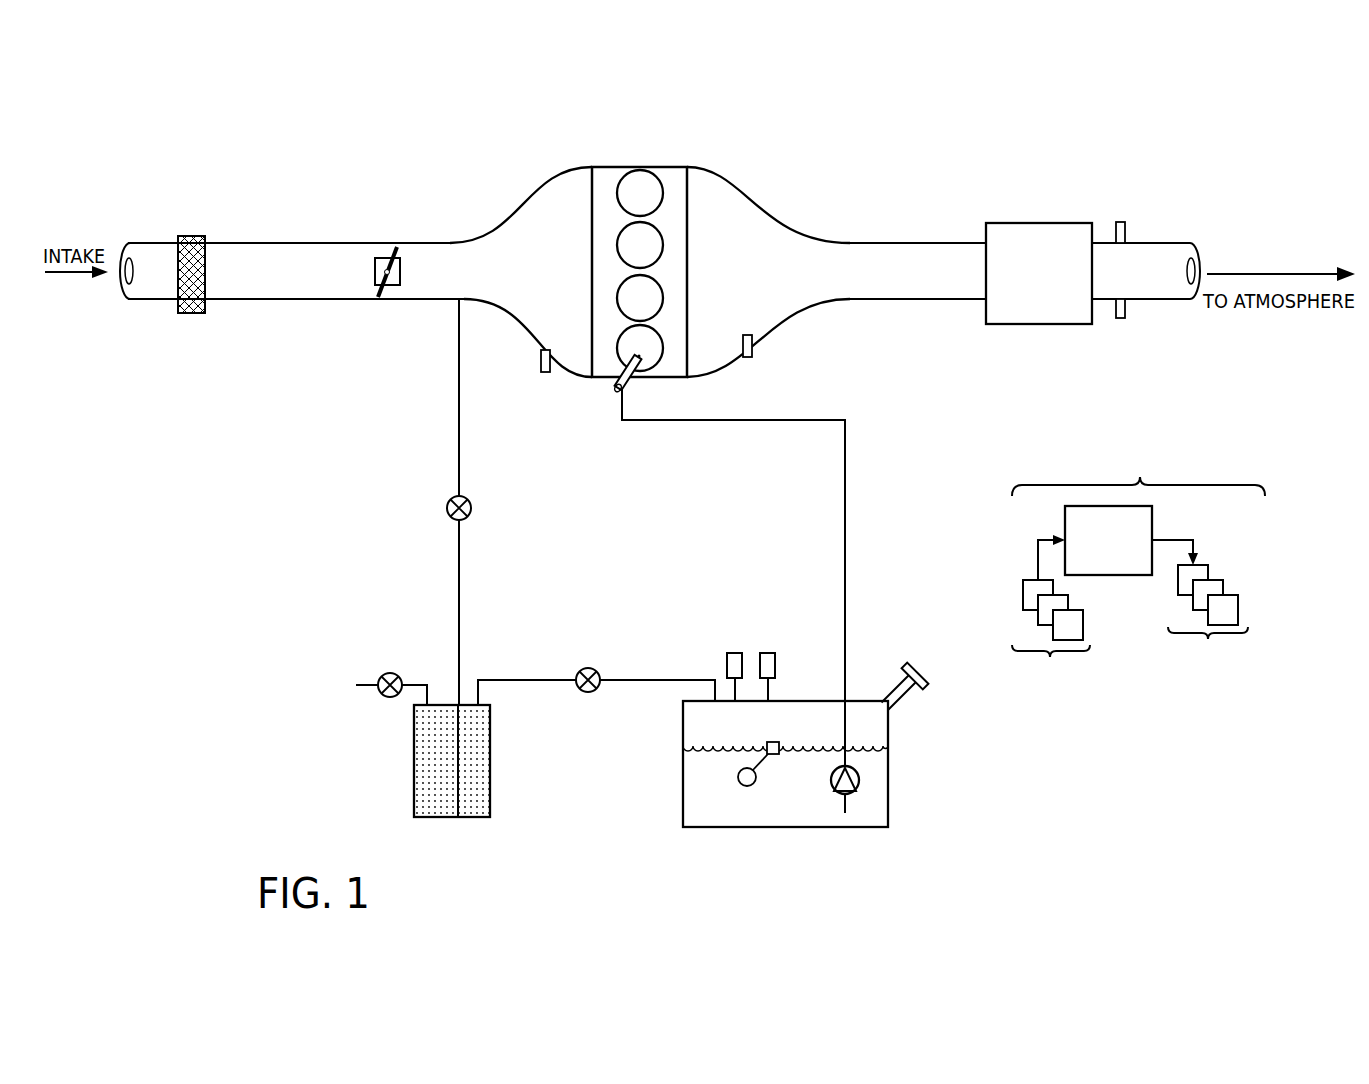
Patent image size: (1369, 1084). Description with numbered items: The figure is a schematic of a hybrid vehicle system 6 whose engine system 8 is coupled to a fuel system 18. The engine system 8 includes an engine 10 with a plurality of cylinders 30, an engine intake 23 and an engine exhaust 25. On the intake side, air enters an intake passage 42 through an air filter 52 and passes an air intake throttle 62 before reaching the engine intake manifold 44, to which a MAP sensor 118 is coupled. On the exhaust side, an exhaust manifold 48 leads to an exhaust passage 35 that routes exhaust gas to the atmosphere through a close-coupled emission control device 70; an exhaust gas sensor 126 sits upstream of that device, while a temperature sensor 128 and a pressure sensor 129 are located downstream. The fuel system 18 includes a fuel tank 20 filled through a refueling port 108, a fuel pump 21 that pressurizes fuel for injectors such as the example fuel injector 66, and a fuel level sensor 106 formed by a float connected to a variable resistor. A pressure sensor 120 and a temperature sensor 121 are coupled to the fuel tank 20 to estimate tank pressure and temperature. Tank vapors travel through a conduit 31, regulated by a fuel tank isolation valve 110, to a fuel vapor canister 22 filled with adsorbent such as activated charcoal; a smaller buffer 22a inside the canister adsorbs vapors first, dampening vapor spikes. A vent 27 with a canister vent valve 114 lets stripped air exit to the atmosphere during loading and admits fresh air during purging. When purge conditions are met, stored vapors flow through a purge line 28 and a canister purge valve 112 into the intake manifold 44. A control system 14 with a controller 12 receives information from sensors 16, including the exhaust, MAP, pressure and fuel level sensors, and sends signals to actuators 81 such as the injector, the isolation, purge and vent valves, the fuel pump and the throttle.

The hybrid vehicle system 6 is at (138, 140).
The engine system 8 is at (1230, 136).
The engine 10 is at (687, 255).
The controller 12 is at (1108, 540).
The control system 14 is at (1138, 465).
The sensors 16 is at (1051, 619).
The fuel system 18 is at (937, 855).
The fuel tank 20 is at (683, 827).
The fuel pump 21 is at (860, 794).
The fuel vapor canister 22 is at (430, 817).
The buffer 22a is at (477, 817).
The engine intake 23 is at (508, 183).
The engine exhaust 25 is at (810, 192).
The vent 27 is at (357, 685).
The purge line 28 is at (461, 470).
The cylinders 30 is at (661, 190).
The conduit 31 is at (641, 680).
The exhaust passage 35 is at (1173, 243).
The intake passage 42 is at (156, 301).
The engine intake manifold 44 is at (557, 284).
The exhaust manifold 48 is at (767, 284).
The air filter 52 is at (192, 236).
The air intake throttle 62 is at (400, 278).
The fuel injector 66 is at (636, 384).
The emission control device 70 is at (1027, 223).
The actuators 81 is at (1200, 613).
The fuel level sensor 106 is at (776, 742).
The refueling port 108 is at (914, 670).
The fuel tank isolation valve 110 is at (582, 668).
The canister purge valve 112 is at (469, 502).
The canister vent valve 114 is at (394, 678).
The MAP sensor 118 is at (541, 357).
The pressure sensor 120 is at (775, 661).
The temperature sensor 121 is at (734, 653).
The exhaust gas sensor 126 is at (752, 340).
The temperature sensor 128 is at (1121, 318).
The pressure sensor 129 is at (1121, 222).